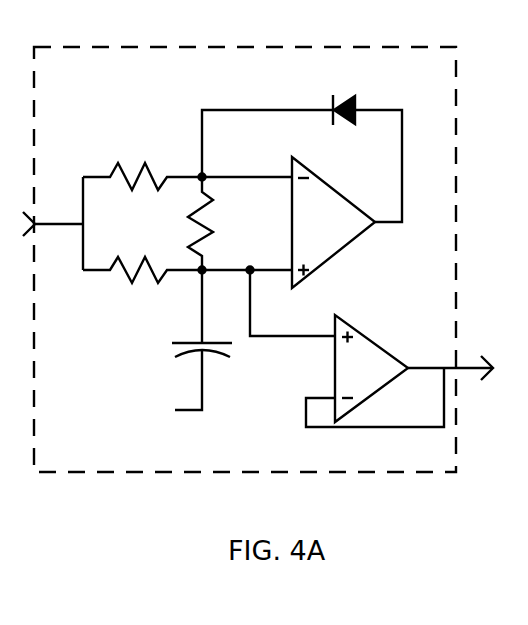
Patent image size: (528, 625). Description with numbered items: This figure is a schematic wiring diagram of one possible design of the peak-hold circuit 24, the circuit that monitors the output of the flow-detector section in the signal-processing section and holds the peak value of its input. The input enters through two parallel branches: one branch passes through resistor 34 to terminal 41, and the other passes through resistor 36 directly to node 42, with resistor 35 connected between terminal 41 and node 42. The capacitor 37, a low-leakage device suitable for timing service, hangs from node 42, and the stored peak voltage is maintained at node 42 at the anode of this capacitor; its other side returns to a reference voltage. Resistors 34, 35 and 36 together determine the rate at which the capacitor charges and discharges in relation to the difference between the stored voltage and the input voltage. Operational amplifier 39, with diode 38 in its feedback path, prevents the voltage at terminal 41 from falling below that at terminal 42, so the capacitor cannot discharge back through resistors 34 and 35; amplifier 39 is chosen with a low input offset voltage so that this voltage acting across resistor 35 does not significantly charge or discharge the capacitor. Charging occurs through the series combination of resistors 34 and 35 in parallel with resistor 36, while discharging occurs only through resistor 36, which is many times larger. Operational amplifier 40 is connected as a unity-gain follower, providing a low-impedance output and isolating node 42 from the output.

The peak-hold circuit 24 is at (245, 280).
The resistor 34 is at (142, 163).
The resistor 35 is at (219, 223).
The resistor 36 is at (142, 256).
The capacitor 37 is at (167, 349).
The diode 38 is at (302, 158).
The operational amplifier 39 is at (337, 222).
The operational amplifier 40 is at (371, 348).
The terminal 41 is at (224, 127).
The node 42 is at (191, 302).